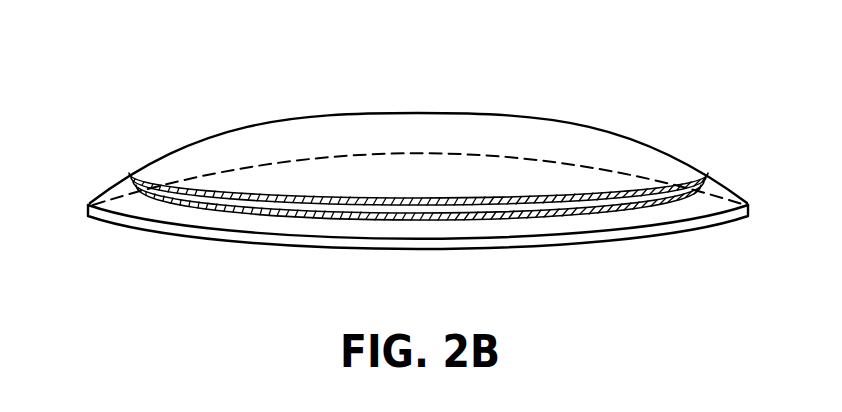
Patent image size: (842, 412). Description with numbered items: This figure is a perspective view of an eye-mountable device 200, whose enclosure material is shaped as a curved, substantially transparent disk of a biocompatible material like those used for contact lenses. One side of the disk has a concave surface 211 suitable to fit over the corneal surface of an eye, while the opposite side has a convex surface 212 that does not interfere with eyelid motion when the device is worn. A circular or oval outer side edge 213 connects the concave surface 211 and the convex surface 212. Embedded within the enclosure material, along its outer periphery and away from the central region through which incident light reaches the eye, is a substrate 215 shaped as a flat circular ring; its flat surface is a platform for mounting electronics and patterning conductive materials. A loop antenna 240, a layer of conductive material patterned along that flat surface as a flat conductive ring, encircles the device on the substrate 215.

The eye-mountable device 200 is at (416, 182).
The concave surface 211 is at (672, 245).
The convex surface 212 is at (661, 144).
The outer side edge 213 is at (538, 251).
The substrate 215 is at (130, 176).
The loop antenna 240 is at (694, 176).